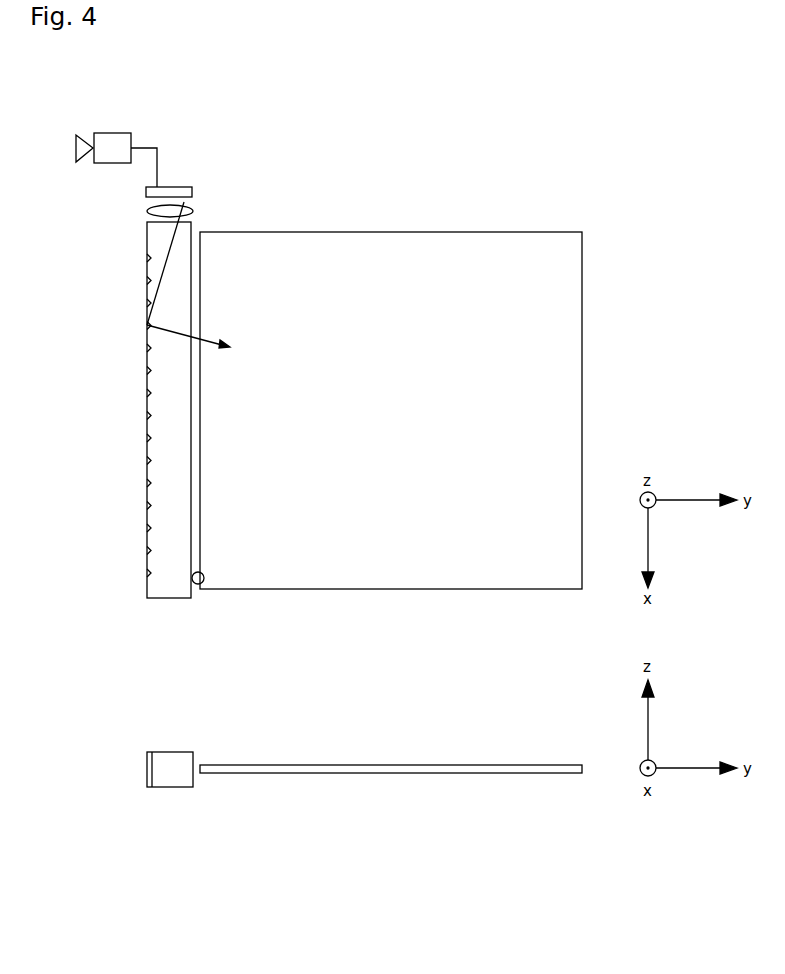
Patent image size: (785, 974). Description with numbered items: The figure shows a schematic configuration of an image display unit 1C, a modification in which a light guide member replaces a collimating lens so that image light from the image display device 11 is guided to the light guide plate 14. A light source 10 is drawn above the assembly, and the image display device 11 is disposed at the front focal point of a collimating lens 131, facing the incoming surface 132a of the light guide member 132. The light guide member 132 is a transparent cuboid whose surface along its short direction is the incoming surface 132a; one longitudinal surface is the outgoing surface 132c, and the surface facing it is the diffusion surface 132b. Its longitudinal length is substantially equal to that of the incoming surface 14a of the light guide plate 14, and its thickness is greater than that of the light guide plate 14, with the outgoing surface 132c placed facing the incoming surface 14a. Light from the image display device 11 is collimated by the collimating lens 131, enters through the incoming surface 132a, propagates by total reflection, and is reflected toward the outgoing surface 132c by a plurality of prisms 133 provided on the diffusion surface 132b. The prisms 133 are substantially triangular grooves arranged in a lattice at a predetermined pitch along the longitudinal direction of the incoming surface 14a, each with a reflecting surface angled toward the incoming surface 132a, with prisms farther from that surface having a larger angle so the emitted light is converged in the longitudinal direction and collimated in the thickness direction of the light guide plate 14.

The image display unit 1C is at (541, 163).
The light source 10 is at (112, 133).
The image display device 11 is at (178, 187).
The collimating lens 131 is at (147, 210).
The light guide member 132 is at (155, 235).
The incoming surface 132a is at (192, 222).
The diffusion surface 132b is at (146, 594).
The outgoing surface 132c is at (195, 600).
The prisms 133 is at (148, 372).
The light guide plate 14 is at (385, 590).
The incoming surface 14a is at (204, 578).